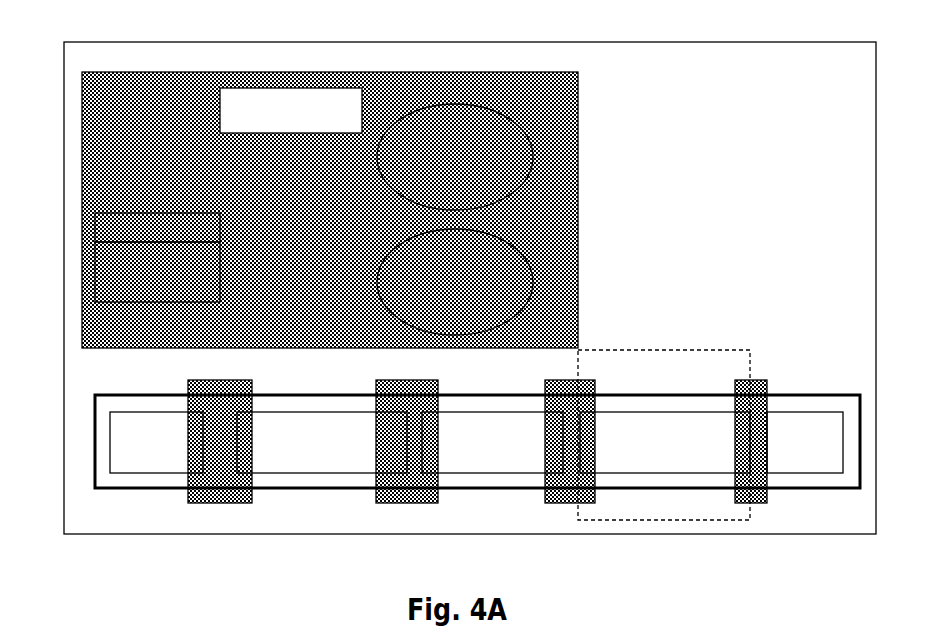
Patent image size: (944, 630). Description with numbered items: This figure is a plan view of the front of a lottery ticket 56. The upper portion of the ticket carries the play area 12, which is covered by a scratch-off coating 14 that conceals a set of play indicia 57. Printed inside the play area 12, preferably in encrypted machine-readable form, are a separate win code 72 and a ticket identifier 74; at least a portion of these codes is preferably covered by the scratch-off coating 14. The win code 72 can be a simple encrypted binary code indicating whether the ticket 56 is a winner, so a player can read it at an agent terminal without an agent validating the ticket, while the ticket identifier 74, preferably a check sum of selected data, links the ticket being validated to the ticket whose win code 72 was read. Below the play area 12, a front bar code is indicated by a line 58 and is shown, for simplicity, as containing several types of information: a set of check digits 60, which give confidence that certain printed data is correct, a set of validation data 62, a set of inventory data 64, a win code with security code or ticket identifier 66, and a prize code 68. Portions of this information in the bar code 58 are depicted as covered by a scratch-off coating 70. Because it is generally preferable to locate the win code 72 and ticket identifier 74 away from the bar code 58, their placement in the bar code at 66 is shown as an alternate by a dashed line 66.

The play area 12 is at (493, 72).
The scratch-off coating 14 is at (388, 92).
The lottery ticket 56 is at (763, 43).
The play indicia 57 is at (517, 236).
The front bar code 58 is at (113, 490).
The check digits 60 is at (148, 468).
The validation data 62 is at (333, 475).
The inventory data 64 is at (482, 475).
The win code and ticket identifier 66 is at (660, 520).
The prize code 68 is at (805, 475).
The scratch-off coating 70 is at (212, 505).
The win code 72 is at (95, 236).
The ticket identifier 74 is at (95, 288).